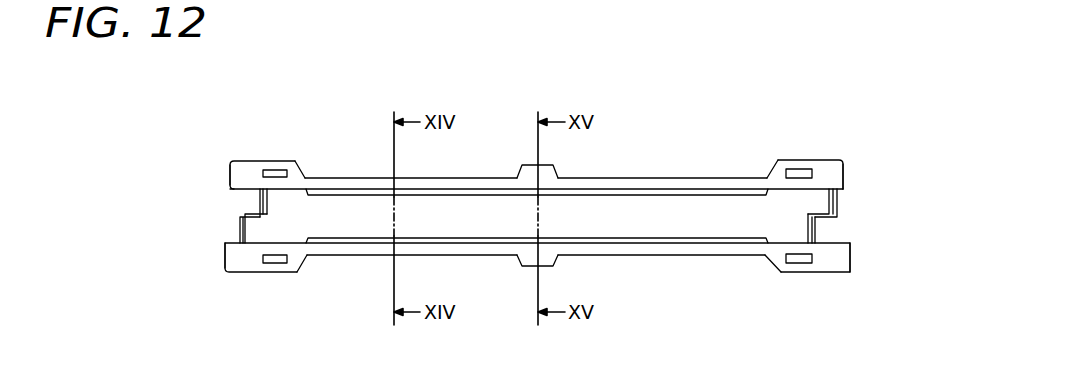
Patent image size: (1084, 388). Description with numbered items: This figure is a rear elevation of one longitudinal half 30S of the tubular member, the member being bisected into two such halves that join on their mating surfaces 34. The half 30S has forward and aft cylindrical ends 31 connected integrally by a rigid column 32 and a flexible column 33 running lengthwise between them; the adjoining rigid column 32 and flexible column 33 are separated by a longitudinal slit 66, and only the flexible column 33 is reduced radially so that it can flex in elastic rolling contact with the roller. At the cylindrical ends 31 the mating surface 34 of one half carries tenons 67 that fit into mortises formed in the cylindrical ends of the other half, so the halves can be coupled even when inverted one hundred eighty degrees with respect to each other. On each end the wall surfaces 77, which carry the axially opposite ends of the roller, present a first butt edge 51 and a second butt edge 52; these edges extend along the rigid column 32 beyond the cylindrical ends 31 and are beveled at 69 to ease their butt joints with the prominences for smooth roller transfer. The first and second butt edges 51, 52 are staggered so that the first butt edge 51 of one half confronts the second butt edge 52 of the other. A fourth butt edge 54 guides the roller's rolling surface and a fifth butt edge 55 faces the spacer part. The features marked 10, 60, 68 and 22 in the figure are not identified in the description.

The battery assembly 10 is at (707, 207).
The longitudinal half 30S is at (630, 184).
The cylindrical end 31 is at (250, 170).
The rigid column 32 is at (485, 256).
The flexible column 33 is at (355, 188).
The mating surface 34 is at (301, 266).
The first butt edge 51 is at (238, 228).
The second butt edge 52 is at (259, 204).
The fourth butt edge 54 is at (231, 172).
The fifth butt edge 55 is at (225, 262).
The central protrusion 60 is at (486, 192).
The longitudinal slit 66 is at (636, 240).
The tenon 67 is at (279, 172).
The right slot 68 is at (798, 170).
The bevel 69 is at (260, 200).
The wall surface 77 is at (291, 213).
The cavity 22 is at (676, 215).